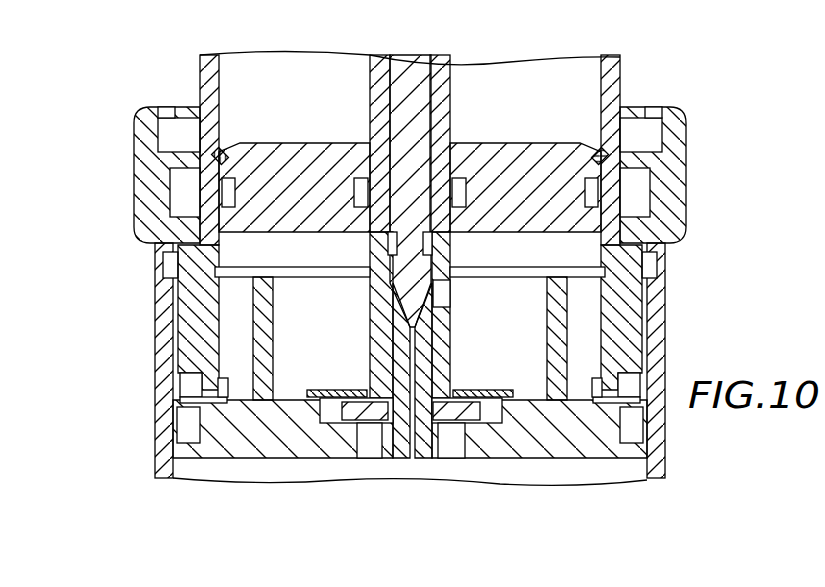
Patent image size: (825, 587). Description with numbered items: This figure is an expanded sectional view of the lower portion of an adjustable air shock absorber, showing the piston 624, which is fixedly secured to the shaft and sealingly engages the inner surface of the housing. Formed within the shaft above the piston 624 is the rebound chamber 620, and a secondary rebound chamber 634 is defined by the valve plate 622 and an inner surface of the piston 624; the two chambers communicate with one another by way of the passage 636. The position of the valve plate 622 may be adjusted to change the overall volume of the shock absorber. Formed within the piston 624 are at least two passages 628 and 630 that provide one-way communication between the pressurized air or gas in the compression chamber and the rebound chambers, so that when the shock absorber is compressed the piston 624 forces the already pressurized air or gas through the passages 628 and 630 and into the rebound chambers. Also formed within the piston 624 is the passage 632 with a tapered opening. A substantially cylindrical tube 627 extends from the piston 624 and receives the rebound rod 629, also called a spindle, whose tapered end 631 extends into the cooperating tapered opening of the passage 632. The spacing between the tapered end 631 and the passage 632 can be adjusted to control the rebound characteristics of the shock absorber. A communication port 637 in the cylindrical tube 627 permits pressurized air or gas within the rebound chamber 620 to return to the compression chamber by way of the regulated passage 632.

The rebound chamber 620 is at (287, 310).
The valve plate 622 is at (290, 150).
The piston 624 is at (248, 452).
The cylindrical tube 627 is at (378, 83).
The passage 628 is at (362, 455).
The rebound rod 629 is at (420, 113).
The passage 630 is at (453, 453).
The tapered end 631 is at (340, 390).
The passage 632 is at (411, 458).
The secondary rebound chamber 634 is at (183, 381).
The passage 636 is at (197, 405).
The communication port 637 is at (450, 297).